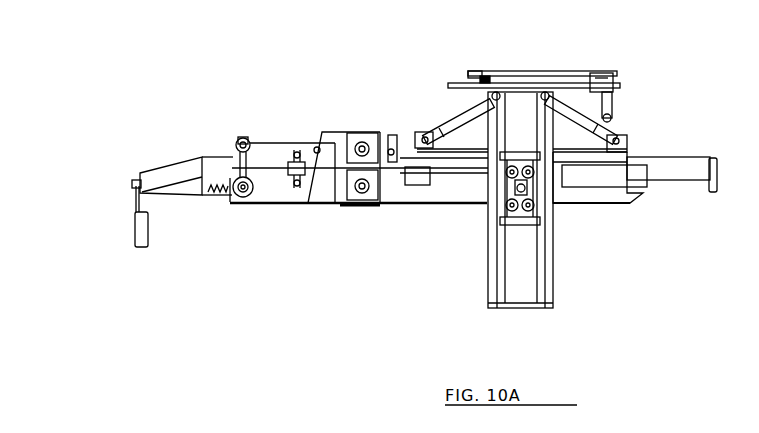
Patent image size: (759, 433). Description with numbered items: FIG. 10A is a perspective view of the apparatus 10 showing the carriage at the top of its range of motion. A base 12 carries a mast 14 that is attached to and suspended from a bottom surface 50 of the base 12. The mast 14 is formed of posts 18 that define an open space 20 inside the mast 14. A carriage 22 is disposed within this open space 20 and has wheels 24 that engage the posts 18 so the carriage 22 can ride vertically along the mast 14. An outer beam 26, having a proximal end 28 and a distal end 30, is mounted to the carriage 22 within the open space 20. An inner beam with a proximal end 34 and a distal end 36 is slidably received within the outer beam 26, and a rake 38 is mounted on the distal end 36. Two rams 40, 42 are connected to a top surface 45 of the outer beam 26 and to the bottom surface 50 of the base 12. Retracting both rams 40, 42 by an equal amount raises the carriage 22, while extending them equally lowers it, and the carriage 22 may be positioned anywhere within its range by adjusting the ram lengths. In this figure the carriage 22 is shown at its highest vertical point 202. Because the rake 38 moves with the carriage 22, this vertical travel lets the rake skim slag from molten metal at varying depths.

The boat lift assembly 10 is at (207, 97).
The base 12 is at (467, 55).
The mast 14 is at (532, 308).
The posts 18 is at (497, 265).
The open space 20 is at (525, 247).
The carriage 22 is at (527, 190).
The wheels 24 is at (508, 205).
The outer beam 26 is at (422, 195).
The proximal end 28 is at (643, 195).
The distal end 30 is at (270, 202).
The proximal end 34 is at (673, 160).
The distal end 36 is at (167, 188).
The rake 38 is at (135, 228).
The ram 40 is at (443, 118).
The ram 42 is at (590, 115).
The top surface 45 is at (422, 138).
The bottom surface 50 is at (455, 85).
The highest vertical point 202 is at (518, 150).